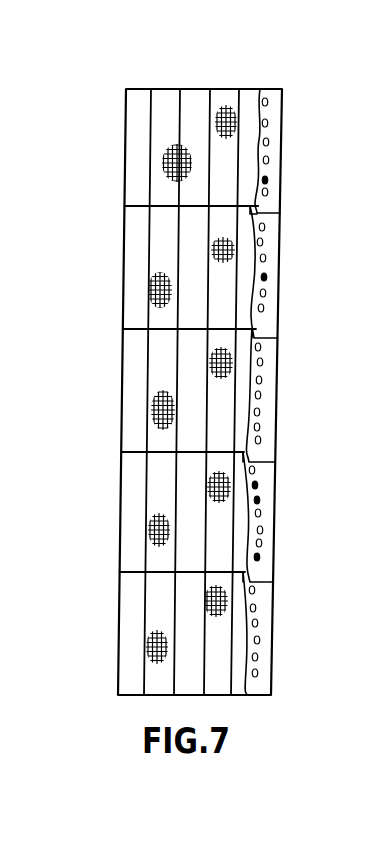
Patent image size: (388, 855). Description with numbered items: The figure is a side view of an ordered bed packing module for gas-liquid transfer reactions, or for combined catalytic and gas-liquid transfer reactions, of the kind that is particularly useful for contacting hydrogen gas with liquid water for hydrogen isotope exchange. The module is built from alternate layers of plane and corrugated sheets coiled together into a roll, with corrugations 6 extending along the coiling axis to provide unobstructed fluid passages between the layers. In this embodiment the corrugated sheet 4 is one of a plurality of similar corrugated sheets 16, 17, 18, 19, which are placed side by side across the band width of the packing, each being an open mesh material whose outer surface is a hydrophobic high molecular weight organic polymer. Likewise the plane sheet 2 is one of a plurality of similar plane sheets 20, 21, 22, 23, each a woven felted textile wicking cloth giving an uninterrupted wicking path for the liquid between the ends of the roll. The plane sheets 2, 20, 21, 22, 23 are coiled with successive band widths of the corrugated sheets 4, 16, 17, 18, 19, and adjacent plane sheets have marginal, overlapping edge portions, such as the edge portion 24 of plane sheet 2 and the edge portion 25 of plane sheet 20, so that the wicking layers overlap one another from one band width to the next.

The plane sheet 2 is at (268, 178).
The corrugated sheet 4 is at (142, 168).
The corrugations 6 is at (170, 100).
The corrugated sheet 16 is at (138, 262).
The corrugated sheet 17 is at (137, 402).
The corrugated sheet 18 is at (135, 522).
The corrugated sheet 19 is at (130, 627).
The plane sheet 20 is at (262, 291).
The plane sheet 21 is at (265, 398).
The plane sheet 22 is at (262, 521).
The plane sheet 23 is at (257, 652).
The marginal overlapping edge portion 24 is at (259, 207).
The marginal overlapping edge portion 25 is at (264, 214).